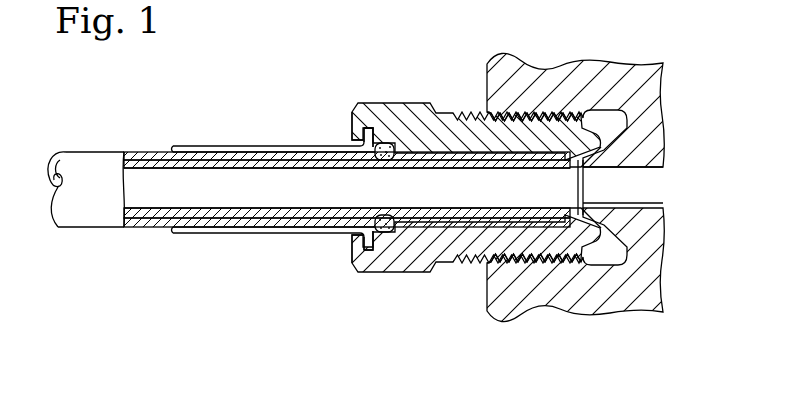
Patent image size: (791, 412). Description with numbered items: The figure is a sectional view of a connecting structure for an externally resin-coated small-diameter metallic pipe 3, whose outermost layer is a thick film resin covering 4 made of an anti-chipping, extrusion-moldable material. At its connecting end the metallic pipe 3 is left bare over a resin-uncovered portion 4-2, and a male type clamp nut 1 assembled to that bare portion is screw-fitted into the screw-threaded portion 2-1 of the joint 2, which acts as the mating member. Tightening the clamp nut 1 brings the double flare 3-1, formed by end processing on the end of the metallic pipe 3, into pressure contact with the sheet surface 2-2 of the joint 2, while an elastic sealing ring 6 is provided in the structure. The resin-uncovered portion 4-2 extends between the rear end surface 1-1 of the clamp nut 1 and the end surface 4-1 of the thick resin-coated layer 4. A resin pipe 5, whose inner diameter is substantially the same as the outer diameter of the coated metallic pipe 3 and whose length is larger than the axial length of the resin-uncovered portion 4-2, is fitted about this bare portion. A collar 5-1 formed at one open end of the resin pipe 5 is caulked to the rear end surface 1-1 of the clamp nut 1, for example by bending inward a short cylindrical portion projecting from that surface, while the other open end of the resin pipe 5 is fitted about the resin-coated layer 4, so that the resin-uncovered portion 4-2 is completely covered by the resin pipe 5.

The clamp nut 1 is at (404, 103).
The rear end surface of the clamp nut 1-1 is at (352, 127).
The joint 2 is at (556, 73).
The screw-threaded portion 2-1 is at (603, 103).
The sheet surface 2-2 is at (668, 185).
The resin-coated small-diameter metallic pipe 3 is at (257, 229).
The double flare 3-1 is at (627, 126).
The thick film resin covering 4 is at (125, 153).
The end surface of the externally resin-coated layer 4-1 is at (250, 152).
The resin-uncovered portion 4-2 is at (305, 163).
The resin pipe 5 is at (265, 146).
The collar 5-1 is at (368, 127).
The elastic sealing ring 6 is at (384, 236).